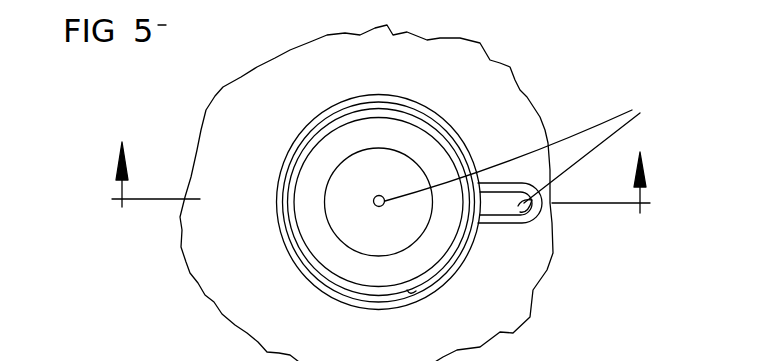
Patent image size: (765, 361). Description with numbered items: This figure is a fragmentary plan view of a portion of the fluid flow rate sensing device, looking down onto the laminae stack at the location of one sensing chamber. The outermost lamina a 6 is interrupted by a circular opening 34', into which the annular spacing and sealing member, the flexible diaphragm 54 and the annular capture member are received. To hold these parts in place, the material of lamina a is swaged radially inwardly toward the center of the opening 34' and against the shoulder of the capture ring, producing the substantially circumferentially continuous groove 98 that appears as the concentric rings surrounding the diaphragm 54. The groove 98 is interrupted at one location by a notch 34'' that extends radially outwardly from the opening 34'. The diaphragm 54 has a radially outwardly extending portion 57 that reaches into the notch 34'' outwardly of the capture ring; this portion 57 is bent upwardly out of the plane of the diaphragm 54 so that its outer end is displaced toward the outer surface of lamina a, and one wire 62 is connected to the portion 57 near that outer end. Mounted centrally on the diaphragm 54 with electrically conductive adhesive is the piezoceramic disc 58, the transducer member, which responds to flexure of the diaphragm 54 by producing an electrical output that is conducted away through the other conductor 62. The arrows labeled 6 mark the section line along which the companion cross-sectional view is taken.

The swaged groove 98 is at (309, 123).
The flexible diaphragm 54 is at (366, 149).
The piezoceramic disc 58 is at (366, 193).
The opening of lamina a 34' is at (439, 301).
The notch 34'' is at (541, 232).
The radially outwardly extending portion 57 is at (524, 208).
The wire 62 is at (613, 130).
The lamina a is at (518, 98).
The section line 6- 6 is at (381, 165).